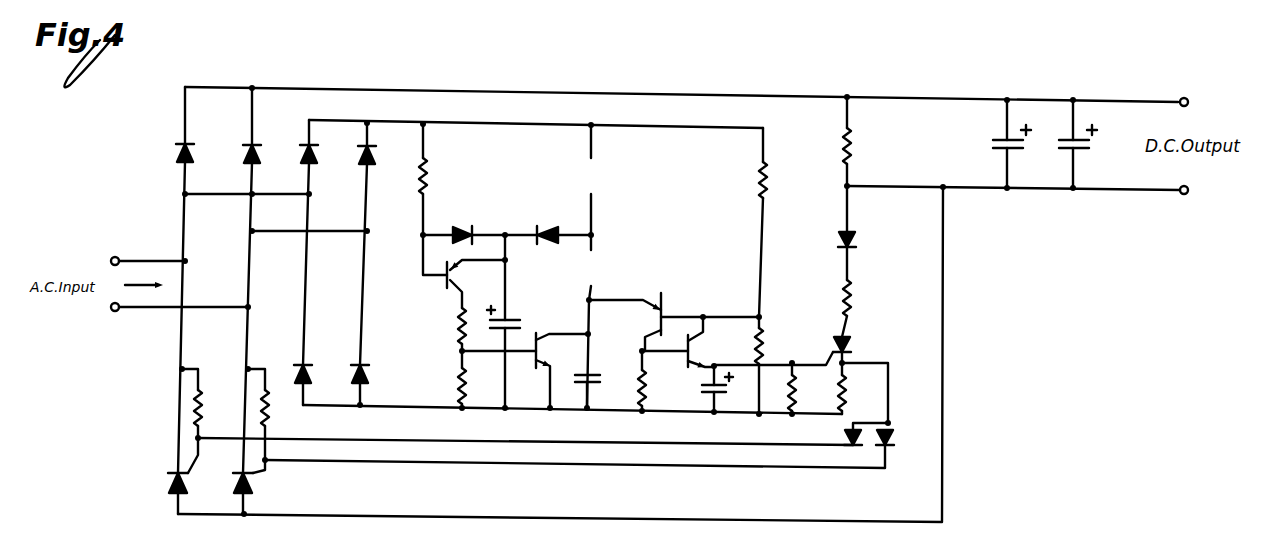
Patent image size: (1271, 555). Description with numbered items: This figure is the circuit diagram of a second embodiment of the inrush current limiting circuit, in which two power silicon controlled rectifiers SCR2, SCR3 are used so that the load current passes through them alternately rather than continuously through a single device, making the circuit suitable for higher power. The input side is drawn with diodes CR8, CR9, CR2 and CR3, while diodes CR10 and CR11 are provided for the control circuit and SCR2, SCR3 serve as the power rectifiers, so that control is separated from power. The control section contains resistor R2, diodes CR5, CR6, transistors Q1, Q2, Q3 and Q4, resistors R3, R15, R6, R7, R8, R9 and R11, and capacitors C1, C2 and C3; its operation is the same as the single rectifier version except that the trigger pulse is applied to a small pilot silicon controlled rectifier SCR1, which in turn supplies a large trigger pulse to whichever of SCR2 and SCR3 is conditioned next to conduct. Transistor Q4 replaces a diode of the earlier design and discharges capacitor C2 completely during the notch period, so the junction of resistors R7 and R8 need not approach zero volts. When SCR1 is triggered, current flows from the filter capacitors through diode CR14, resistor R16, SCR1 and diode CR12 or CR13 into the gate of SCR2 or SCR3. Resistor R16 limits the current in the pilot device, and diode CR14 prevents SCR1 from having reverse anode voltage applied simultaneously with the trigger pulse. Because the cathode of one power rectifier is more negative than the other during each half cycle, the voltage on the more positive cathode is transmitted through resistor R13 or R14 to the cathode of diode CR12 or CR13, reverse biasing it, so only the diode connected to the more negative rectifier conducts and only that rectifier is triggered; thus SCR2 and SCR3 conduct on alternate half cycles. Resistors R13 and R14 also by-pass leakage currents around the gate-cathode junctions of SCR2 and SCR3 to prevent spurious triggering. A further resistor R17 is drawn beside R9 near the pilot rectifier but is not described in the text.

The diode CR8 is at (176, 166).
The diode CR9 is at (248, 167).
The diode CR2 is at (304, 167).
The diode CR3 is at (362, 168).
The resistor R13 is at (202, 420).
The resistor R14 is at (268, 413).
The power silicon controlled rectifier SCR2 is at (170, 492).
The power silicon controlled rectifier SCR3 is at (252, 493).
The diode CR10 is at (310, 376).
The diode CR11 is at (368, 376).
The resistor R2 is at (427, 188).
The diode CR5 is at (458, 225).
The diode CR6 is at (555, 225).
The transistor Q1 is at (444, 288).
The resistor R3 is at (458, 322).
The capacitor C1 is at (512, 318).
The transistor Q4 is at (538, 335).
The resistor R15 is at (458, 378).
The capacitor C2 is at (592, 384).
The transistor Q2 is at (664, 305).
The transistor Q3 is at (690, 364).
The resistor R6 is at (646, 392).
The capacitor C3 is at (720, 395).
The resistor R7 is at (767, 176).
The resistor R8 is at (763, 340).
The resistor R11 is at (851, 155).
The diode CR14 is at (853, 236).
The resistor R16 is at (851, 290).
The pilot silicon controlled rectifier SCR1 is at (846, 338).
The resistor R9 is at (796, 396).
The resistor R17 is at (846, 392).
The diode CR12 is at (845, 436).
The diode CR13 is at (906, 428).